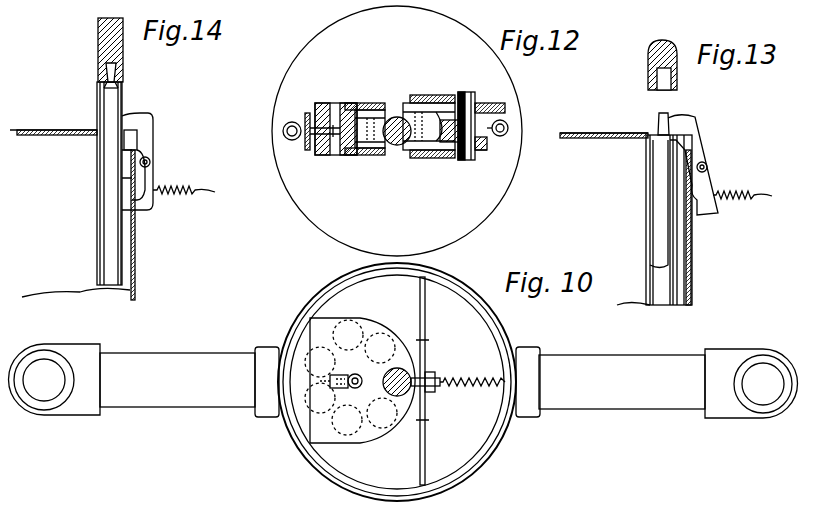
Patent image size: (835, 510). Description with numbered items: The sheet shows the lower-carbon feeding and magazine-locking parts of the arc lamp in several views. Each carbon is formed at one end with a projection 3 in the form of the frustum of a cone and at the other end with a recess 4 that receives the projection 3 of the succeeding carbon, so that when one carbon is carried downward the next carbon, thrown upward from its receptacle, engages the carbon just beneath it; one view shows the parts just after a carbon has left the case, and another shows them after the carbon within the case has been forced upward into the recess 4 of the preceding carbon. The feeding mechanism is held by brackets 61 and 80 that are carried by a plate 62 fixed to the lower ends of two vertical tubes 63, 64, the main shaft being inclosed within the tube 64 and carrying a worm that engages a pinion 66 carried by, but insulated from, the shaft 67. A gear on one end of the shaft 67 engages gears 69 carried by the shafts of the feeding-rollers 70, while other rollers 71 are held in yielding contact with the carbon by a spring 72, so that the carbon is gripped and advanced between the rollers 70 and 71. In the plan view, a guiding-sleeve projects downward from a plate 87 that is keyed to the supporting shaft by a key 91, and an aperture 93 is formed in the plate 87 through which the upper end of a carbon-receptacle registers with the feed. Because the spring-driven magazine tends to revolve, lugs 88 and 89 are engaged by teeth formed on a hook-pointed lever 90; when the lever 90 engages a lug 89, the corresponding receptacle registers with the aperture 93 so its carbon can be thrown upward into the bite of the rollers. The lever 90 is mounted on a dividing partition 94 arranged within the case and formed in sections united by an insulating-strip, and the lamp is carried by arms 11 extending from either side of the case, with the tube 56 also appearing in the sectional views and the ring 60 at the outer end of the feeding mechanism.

In FIG. 14, the projection 3 is at (109, 183).
In FIG. 13, the projection 3 is at (669, 118).
In FIG. 14, the recess 4 is at (117, 70).
In FIG. 13, the recess 4 is at (657, 90).
In FIG. 10, the arm 11 is at (403, 381).
In FIG. 14, the tube 56 is at (111, 128).
In FIG. 13, the tube 56 is at (659, 204).
In FIG. 12, the ring 60 is at (291, 120).
In FIG. 12, the bracket 61 is at (487, 105).
In FIG. 12, the plate 62 is at (505, 128).
In FIG. 12, the vertical tube 63 is at (503, 135).
In FIG. 12, the vertical tube 64 is at (506, 124).
In FIG. 12, the pinion 66 is at (489, 156).
In FIG. 12, the shaft 67 is at (468, 95).
In FIG. 12, the gear 69 is at (410, 110).
In FIG. 12, the feeding-roller 70 is at (399, 148).
In FIG. 12, the roller 71 is at (380, 150).
In FIG. 12, the spring 72 is at (346, 140).
In FIG. 12, the bracket 80 is at (335, 115).
In FIG. 10, the plate 87 is at (365, 443).
In FIG. 14, the lug 88 is at (140, 128).
In FIG. 14, the lug 89 is at (135, 208).
In FIG. 14, the hook-pointed lever 90 is at (138, 138).
In FIG. 13, the hook-pointed lever 90 is at (700, 150).
In FIG. 10, the key 91 is at (360, 388).
In FIG. 10, the aperture 93 is at (400, 368).
In FIG. 10, the dividing partition 94 is at (425, 318).